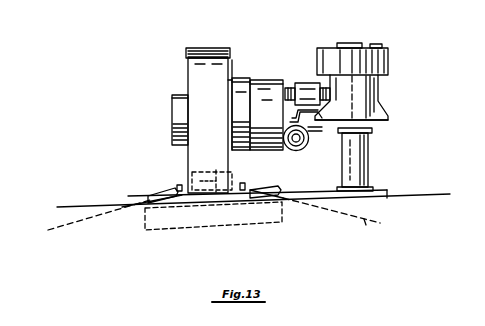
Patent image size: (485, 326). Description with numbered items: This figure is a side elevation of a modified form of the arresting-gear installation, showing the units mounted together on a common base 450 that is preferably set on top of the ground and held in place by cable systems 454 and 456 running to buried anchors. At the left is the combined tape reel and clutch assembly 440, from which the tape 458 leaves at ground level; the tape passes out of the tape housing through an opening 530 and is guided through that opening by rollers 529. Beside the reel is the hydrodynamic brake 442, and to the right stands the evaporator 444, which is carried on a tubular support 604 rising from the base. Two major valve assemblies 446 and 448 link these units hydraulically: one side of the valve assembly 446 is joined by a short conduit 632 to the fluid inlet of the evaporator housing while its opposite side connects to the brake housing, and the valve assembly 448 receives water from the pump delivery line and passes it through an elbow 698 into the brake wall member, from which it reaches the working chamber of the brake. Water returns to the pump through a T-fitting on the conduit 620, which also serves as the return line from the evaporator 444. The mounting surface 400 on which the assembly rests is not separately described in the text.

The base plate 400 is at (305, 188).
The combined tape reel and clutch assembly 440 is at (209, 44).
The hydrodynamic brake 442 is at (267, 61).
The evaporator 444 is at (389, 55).
The valve assembly 446 is at (300, 78).
The valve assembly 448 is at (297, 148).
The common base 450 is at (243, 200).
The cable system 454 is at (87, 231).
The cable system 456 is at (364, 222).
The tape 458 is at (190, 173).
The rollers 529 is at (202, 198).
The opening 530 is at (222, 178).
The tubular support 604 is at (368, 155).
The conduit 620 is at (308, 138).
The short conduit 632 is at (324, 88).
The elbow 698 is at (278, 148).